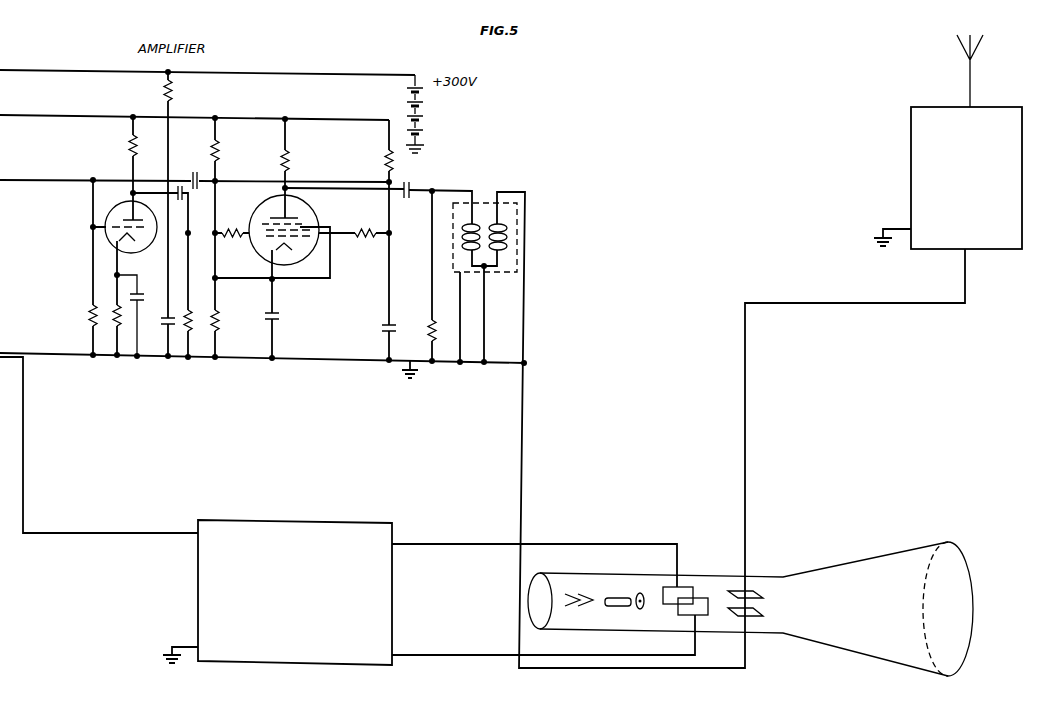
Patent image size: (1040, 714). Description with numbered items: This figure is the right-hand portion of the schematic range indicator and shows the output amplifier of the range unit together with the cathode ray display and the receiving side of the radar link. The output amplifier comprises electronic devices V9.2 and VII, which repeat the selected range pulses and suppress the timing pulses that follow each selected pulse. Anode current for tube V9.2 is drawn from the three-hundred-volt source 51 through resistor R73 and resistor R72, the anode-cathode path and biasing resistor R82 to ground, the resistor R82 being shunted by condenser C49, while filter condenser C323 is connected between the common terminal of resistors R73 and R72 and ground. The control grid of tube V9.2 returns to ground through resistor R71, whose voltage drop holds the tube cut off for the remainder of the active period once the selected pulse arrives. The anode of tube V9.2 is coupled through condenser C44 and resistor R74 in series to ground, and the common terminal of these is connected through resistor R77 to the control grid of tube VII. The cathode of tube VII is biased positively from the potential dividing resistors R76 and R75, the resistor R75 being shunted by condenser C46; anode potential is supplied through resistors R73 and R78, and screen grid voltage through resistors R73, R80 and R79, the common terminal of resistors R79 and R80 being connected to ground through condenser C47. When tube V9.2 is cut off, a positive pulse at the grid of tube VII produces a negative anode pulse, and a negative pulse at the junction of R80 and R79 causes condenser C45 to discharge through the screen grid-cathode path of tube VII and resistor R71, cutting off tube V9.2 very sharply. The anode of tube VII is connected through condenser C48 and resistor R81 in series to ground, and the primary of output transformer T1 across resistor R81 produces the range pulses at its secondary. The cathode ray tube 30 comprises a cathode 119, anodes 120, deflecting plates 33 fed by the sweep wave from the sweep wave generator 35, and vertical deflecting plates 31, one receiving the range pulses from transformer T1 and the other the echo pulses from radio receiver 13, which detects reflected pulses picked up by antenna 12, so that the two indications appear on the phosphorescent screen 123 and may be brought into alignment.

The resistor R73 is at (186, 90).
The resistor R72 is at (153, 146).
The potential dividing resistor R76 is at (245, 150).
The resistor R78 is at (290, 158).
The resistor R80 is at (386, 158).
The 300-volt source 51 is at (430, 118).
The condenser C45 is at (188, 175).
The condenser C44 is at (197, 194).
The electronic device V9.2 is at (120, 210).
The electronic device VII is at (282, 204).
The resistor R77 is at (240, 222).
The resistor R79 is at (369, 229).
The condenser C48 is at (412, 193).
The output transformer T1 is at (480, 205).
The resistor R71 is at (91, 304).
The condenser C49 is at (145, 290).
The resistor R74 is at (196, 310).
The potential dividing resistor R75 is at (236, 309).
The condenser C46 is at (283, 326).
The condenser C47 is at (384, 323).
The resistor R81 is at (429, 321).
The biasing resistor R82 is at (116, 322).
The filter condenser C323 is at (161, 333).
The sweep wave generator 35 is at (352, 522).
The cathode ray tube 30 is at (838, 572).
The phosphorescent screen 123 is at (955, 563).
The cathode 119 is at (573, 592).
The anodes 120 is at (640, 592).
The deflecting plates 33 is at (703, 606).
The vertical deflecting plates 31 is at (729, 610).
The radio receiver 13 is at (1003, 114).
The antenna 12 is at (985, 51).